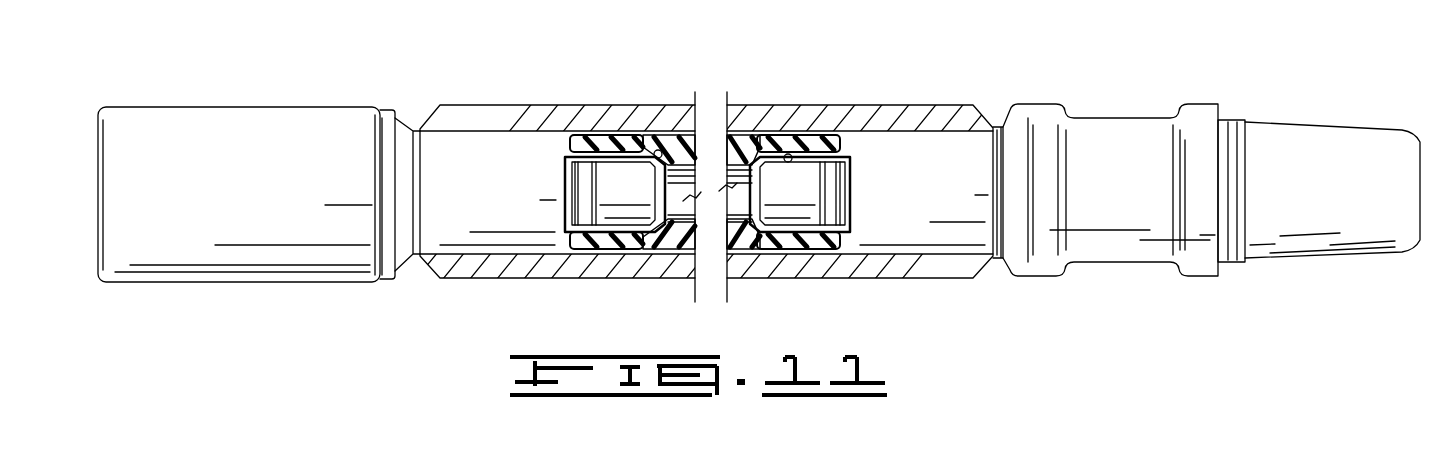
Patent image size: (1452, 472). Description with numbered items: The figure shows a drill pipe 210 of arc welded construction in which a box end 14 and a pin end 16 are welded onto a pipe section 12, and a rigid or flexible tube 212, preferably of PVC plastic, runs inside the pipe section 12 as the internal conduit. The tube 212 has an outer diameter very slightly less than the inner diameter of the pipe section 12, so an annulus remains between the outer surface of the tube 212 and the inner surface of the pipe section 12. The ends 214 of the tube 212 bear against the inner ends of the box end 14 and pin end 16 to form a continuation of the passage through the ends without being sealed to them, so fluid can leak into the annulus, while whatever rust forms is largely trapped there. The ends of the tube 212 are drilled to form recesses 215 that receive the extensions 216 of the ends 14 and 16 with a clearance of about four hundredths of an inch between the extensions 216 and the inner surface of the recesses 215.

The pipe section 12 is at (500, 117).
The box end 14 is at (233, 108).
The pin end 16 is at (1283, 122).
The drill pipe 210 is at (265, 300).
The tube 212 is at (675, 283).
The ends of the tube 214 is at (572, 250).
The recesses 215 is at (655, 150).
The extension 216 is at (636, 214).